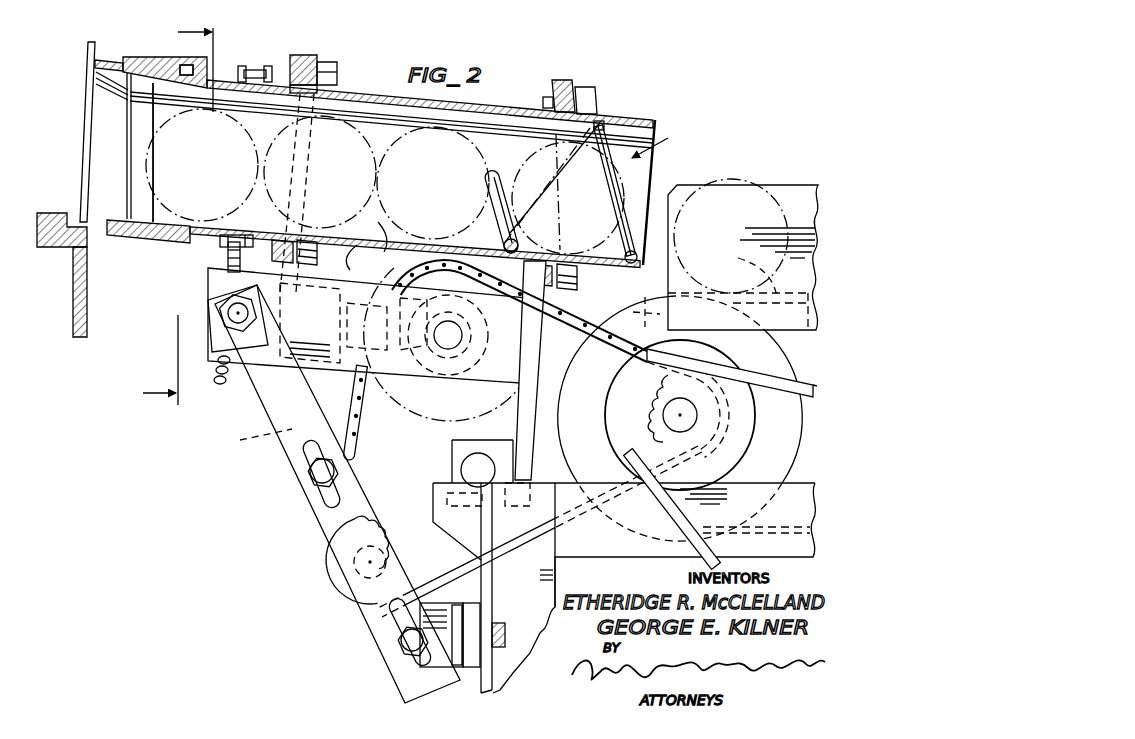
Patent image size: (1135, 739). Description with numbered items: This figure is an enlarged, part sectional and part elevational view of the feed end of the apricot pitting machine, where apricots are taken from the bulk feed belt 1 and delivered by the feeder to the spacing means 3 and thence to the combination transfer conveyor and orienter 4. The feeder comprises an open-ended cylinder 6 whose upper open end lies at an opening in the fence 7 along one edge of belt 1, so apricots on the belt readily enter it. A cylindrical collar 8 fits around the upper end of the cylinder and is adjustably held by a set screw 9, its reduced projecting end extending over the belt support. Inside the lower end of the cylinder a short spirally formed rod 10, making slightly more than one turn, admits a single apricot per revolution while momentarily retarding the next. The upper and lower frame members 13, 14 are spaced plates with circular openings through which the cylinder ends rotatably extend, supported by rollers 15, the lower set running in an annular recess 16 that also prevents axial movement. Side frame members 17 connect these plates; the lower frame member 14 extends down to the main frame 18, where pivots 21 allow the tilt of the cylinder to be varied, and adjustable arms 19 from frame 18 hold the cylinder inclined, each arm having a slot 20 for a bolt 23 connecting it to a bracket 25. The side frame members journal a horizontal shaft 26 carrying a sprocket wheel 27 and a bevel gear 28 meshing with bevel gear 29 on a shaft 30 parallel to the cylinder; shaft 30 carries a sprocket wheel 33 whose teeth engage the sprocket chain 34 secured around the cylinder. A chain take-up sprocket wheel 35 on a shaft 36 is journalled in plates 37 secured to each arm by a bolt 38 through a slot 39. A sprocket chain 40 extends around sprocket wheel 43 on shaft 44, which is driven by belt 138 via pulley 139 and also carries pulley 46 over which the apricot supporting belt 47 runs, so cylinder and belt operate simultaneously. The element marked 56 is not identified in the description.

The bulk feed conveyor belt 1 is at (47, 208).
The spacing means 3 is at (403, 214).
The combination transfer conveyor and orienter 4 is at (768, 178).
The open-ended cylinder 6 is at (380, 90).
The fence 7 is at (88, 50).
The cylindrical collar 8 is at (130, 245).
The set screw 9 is at (183, 64).
The spirally formed rod 10 is at (627, 215).
The upper frame member 13 is at (305, 56).
The lower frame member 14 is at (563, 80).
The rollers 15 is at (330, 63).
The annular recess 16 is at (598, 93).
The side frame members 17 is at (218, 279).
The main frame 18 is at (566, 566).
The adjustable arms 19 is at (283, 452).
The longitudinal slot 20 is at (392, 623).
The pivots 21 is at (472, 469).
The bolt 23 is at (402, 646).
The bracket 25 is at (447, 612).
The horizontal shaft 26 is at (455, 337).
The sprocket wheel 27 is at (470, 400).
The bevel gear 28 is at (482, 349).
The bevel gear 29 is at (422, 290).
The shaft 30 is at (333, 372).
The sprocket wheel 33 is at (220, 360).
The sprocket chain 34 is at (258, 64).
The chain take-up sprocket wheel 35 is at (412, 545).
The shaft 36 is at (362, 563).
The plates 37 is at (254, 439).
The bolt 38 is at (330, 497).
The slot 39 is at (318, 477).
The sprocket chain 40 is at (360, 452).
The sprocket wheel 43 is at (642, 387).
The shaft 44 is at (668, 424).
The pulley 46 is at (651, 329).
The apricot supporting belt 47 is at (740, 262).
The guide 56 is at (366, 249).
The belt 138 is at (686, 521).
The pulley 139 is at (733, 375).